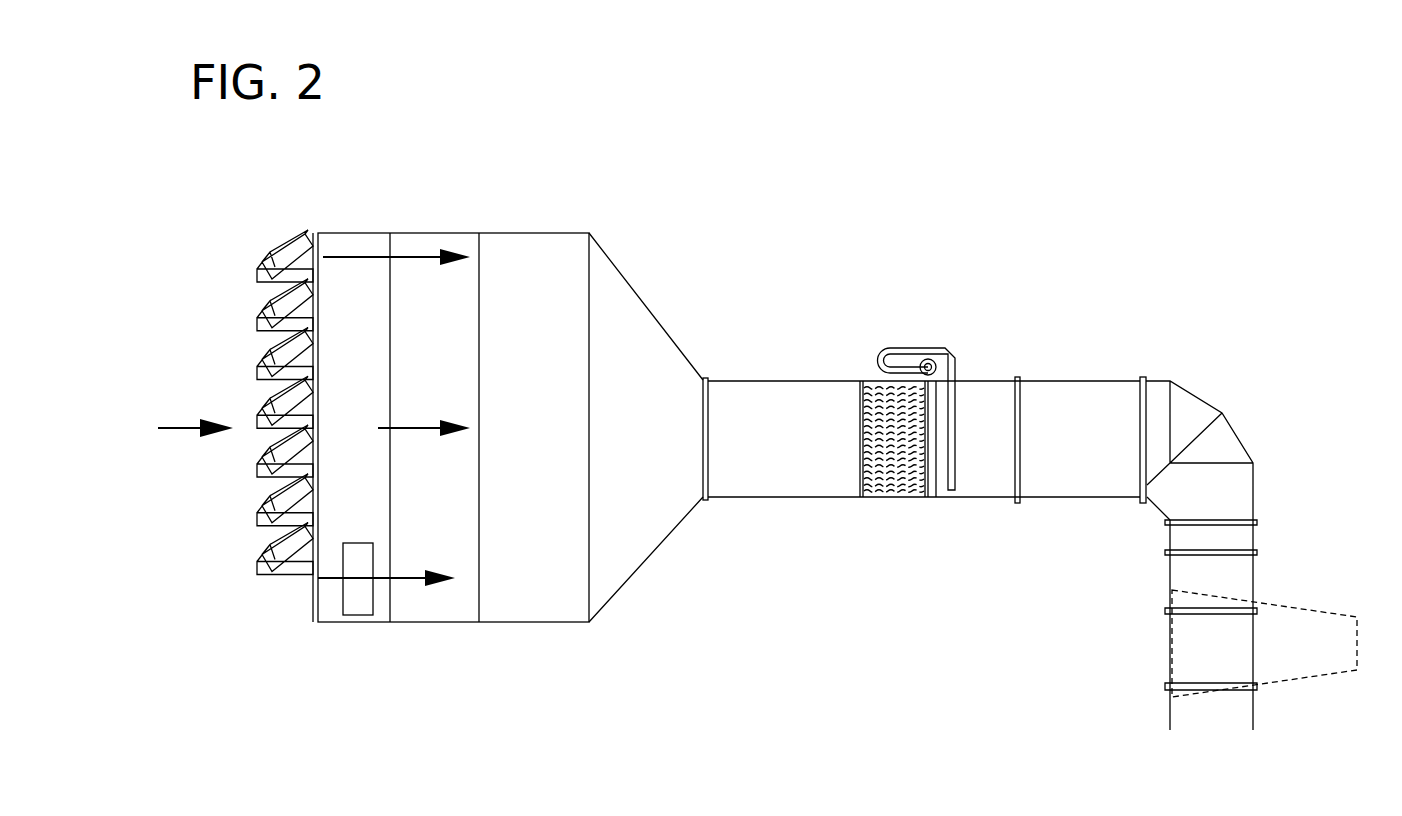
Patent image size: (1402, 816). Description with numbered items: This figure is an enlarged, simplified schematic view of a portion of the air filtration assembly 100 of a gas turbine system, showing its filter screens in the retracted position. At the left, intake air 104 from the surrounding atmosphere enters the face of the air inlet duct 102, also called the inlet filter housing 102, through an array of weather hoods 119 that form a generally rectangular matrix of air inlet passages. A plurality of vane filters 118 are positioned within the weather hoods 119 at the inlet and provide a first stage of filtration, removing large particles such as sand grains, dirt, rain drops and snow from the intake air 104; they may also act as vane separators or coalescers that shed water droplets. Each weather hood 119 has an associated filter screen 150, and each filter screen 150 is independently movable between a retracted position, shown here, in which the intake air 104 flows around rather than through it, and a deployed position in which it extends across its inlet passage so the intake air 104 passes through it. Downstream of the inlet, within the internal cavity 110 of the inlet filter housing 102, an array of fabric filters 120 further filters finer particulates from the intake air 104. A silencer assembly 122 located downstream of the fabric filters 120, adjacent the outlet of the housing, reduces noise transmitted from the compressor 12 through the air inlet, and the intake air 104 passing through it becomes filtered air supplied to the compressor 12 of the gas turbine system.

The compressor 12 is at (1293, 607).
The air filtration assembly 100 is at (949, 326).
The air inlet duct 102 is at (513, 233).
The intake air 104 is at (180, 430).
The internal cavity 110 is at (530, 300).
The vane filters 118 is at (297, 622).
The weather hoods 119 is at (267, 268).
The array of fabric filters 120 is at (372, 605).
The silencer assembly 122 is at (883, 497).
The filter screens 150 is at (275, 362).